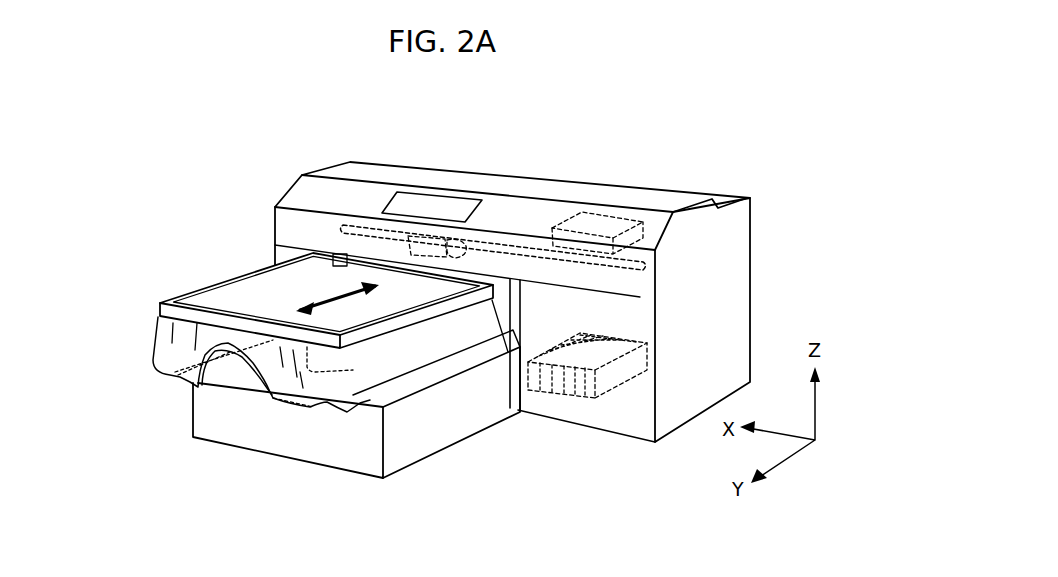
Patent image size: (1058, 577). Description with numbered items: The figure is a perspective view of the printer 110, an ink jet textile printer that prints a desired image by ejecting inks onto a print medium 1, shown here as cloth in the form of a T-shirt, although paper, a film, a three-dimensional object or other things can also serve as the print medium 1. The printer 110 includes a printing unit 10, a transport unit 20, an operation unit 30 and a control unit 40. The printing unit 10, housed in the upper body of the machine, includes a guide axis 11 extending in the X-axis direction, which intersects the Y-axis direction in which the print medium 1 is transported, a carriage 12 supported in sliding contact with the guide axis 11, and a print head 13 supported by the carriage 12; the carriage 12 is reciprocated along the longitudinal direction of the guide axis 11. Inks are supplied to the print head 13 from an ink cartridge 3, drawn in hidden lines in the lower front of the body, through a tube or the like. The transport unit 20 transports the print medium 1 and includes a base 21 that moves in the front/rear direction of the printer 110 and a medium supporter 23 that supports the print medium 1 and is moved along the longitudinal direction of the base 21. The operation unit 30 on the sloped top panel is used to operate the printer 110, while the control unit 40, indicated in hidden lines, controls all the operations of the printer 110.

The printer 110 is at (650, 100).
The printing unit 10 is at (580, 119).
The guide axis 11 is at (522, 248).
The carriage 12 is at (415, 236).
The print head 13 is at (463, 246).
The operation unit 30 is at (434, 204).
The control unit 40 is at (598, 221).
The ink cartridge 3 is at (562, 346).
The medium supporter 23 is at (166, 278).
The print medium 1 is at (153, 357).
The transport unit 20 is at (452, 466).
The base 21 is at (468, 412).